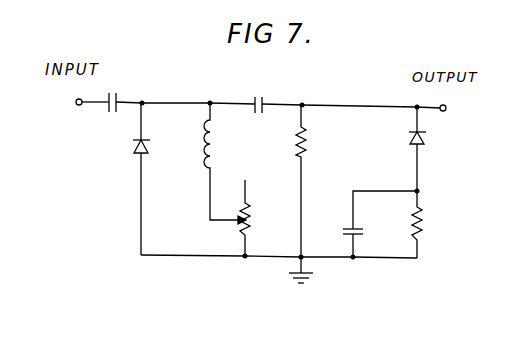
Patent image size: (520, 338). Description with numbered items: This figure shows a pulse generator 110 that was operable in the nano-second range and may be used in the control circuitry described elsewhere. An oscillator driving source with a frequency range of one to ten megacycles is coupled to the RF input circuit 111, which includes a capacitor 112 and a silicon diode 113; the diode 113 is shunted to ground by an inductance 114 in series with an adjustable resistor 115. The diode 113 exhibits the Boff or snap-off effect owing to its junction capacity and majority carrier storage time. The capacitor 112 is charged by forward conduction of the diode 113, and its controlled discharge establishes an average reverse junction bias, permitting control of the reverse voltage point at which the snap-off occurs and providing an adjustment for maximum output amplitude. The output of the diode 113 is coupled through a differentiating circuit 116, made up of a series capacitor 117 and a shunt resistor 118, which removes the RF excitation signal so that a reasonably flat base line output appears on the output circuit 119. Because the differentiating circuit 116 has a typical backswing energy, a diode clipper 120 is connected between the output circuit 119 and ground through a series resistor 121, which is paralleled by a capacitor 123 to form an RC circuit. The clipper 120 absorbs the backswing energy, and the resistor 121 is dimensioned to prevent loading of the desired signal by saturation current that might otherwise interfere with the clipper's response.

The pulse generator 110 is at (364, 87).
The input circuit 111 is at (75, 103).
The capacitor 112 is at (115, 96).
The diode 113 is at (136, 150).
The inductance 114 is at (203, 147).
The adjustable resistor 115 is at (250, 210).
The differentiating circuit 116 is at (282, 152).
The capacitor 117 is at (257, 94).
The resistor 118 is at (308, 141).
The output circuit 119 is at (449, 110).
The diode clipper 120 is at (424, 140).
The resistor 121 is at (421, 219).
The capacitor 123 is at (364, 236).